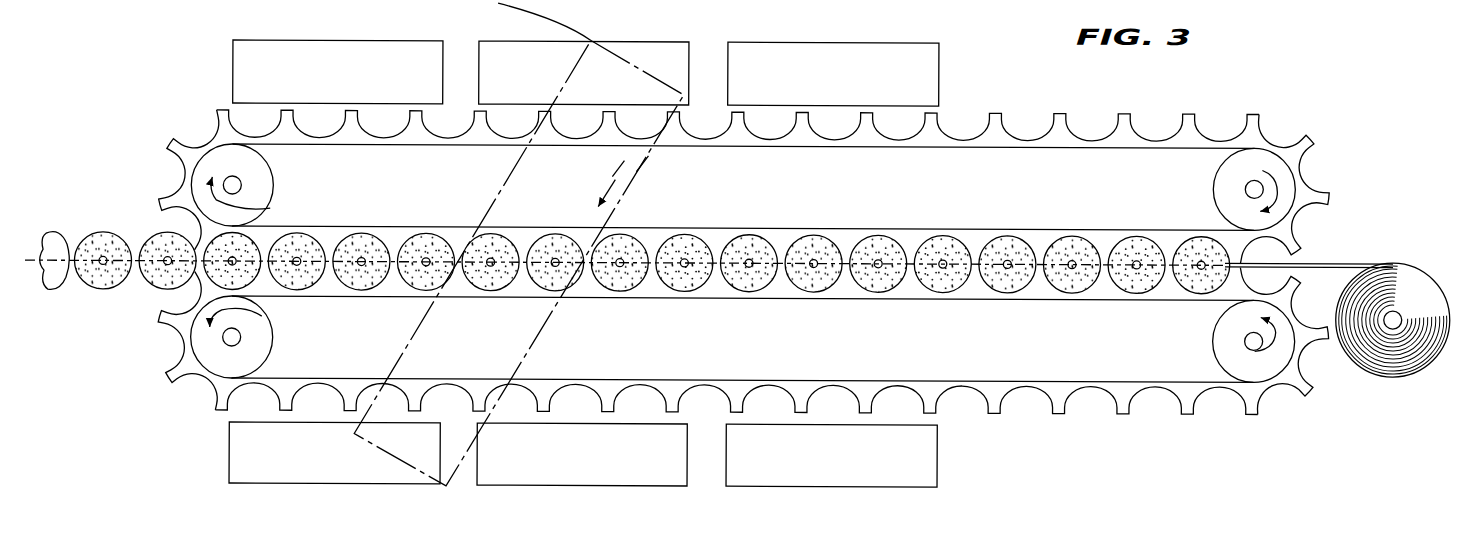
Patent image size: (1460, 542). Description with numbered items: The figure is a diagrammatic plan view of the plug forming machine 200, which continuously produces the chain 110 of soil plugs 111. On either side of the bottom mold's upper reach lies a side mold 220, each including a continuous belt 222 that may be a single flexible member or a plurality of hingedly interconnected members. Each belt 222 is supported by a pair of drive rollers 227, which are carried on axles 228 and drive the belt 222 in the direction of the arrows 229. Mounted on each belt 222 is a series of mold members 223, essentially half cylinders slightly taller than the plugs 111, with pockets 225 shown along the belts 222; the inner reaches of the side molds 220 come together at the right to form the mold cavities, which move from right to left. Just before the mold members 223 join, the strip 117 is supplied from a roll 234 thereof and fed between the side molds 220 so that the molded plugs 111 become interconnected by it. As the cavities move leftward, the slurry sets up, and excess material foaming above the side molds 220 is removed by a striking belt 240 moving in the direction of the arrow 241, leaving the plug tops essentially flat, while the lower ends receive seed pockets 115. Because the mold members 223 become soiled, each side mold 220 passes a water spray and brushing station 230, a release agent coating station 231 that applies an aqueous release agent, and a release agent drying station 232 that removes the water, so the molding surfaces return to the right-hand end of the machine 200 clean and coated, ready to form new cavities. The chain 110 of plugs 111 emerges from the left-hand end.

The plug forming machine 200 is at (110, 57).
The chain of plugs 110 is at (50, 206).
The soil plug 111 is at (148, 232).
The seed pocket 115 is at (126, 288).
The strip 117 is at (88, 285).
The side mold 220 is at (1104, 95).
The continuous belt 222 is at (995, 145).
The mold member 223 is at (1254, 131).
The pockets 225 is at (1283, 143).
The drive roller 227 is at (273, 164).
The axle 228 is at (242, 185).
The arrow 229 is at (270, 208).
The water spray and brushing station 230 is at (262, 40).
The release agent coating station 231 is at (521, 41).
The release agent drying station 232 is at (838, 41).
The roll 234 is at (1422, 367).
The striking belt 240 is at (622, 198).
The arrow 241 is at (632, 170).